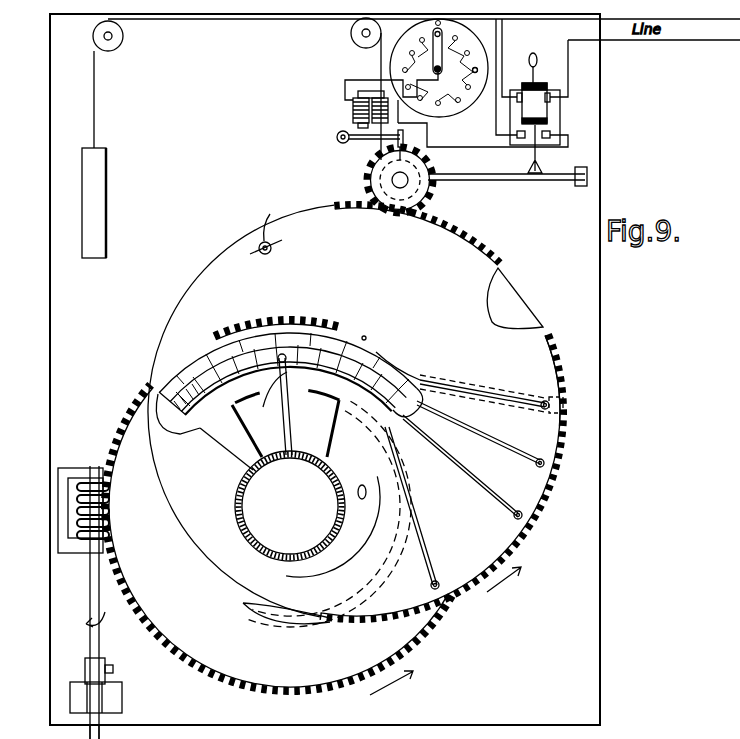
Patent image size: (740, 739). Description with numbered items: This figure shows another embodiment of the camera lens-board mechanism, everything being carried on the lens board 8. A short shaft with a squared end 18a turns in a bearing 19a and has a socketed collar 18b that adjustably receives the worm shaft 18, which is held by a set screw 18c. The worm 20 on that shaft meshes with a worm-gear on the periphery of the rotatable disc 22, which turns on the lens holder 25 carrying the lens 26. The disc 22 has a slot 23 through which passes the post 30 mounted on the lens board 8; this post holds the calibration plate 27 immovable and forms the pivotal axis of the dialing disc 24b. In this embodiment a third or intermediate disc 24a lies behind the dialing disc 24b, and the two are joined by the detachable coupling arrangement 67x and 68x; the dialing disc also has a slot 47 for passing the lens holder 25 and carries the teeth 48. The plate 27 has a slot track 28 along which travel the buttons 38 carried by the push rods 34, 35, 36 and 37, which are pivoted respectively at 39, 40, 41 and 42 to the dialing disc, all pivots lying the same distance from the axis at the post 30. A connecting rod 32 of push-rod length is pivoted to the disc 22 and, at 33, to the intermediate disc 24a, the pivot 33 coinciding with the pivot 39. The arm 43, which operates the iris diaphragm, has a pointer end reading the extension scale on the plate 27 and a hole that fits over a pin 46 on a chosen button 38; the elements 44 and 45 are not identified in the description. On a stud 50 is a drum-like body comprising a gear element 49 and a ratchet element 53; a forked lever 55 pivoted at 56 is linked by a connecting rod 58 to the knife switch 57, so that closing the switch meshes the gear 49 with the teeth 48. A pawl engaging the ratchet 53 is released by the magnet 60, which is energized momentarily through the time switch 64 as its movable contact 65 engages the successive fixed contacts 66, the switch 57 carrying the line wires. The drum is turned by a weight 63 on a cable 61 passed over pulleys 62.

The lens board 8 is at (50, 68).
The worm shaft 18 is at (67, 468).
The squared end of short shaft 18a is at (115, 731).
The socketed collar 18b is at (88, 665).
The set screw 18c is at (114, 669).
The bearing 19a is at (108, 701).
The worm 20 is at (108, 511).
The rotatable disc 22 is at (128, 419).
The slot 23 is at (249, 604).
The intermediate disc 24a is at (516, 308).
The dialing disc 24b is at (534, 343).
The lens holder 25 is at (329, 546).
The lens 26 is at (300, 491).
The calibration plate 27 is at (181, 436).
The slot track 28 is at (206, 418).
The post 30 is at (291, 423).
The connecting rod 32 is at (440, 376).
The pivot 33 is at (564, 401).
The push rod 34 is at (487, 399).
The push rod 35 is at (480, 476).
The push rod 36 is at (424, 556).
The push rod 37 is at (491, 441).
The button 38 is at (377, 352).
The pivot 39 is at (542, 400).
The pivot 40 is at (518, 510).
The pivot 41 is at (441, 581).
The pivot 42 is at (540, 458).
The arm 43 is at (287, 433).
The graduated scale 44 is at (283, 355).
The link 45 is at (271, 400).
The pin 46 is at (363, 335).
The slot 47 is at (362, 487).
The teeth 48 is at (470, 231).
The gear element 49 is at (421, 205).
The stud 50 is at (430, 190).
The ratchet element 53 is at (369, 182).
The forked lever 55 is at (555, 180).
The pivot 56 is at (581, 183).
The knife switch 57 is at (548, 111).
The connecting rod 58 is at (412, 142).
The magnet 60 is at (352, 110).
The cable 61 is at (226, 22).
The pulley 62 is at (118, 45).
The weight 63 is at (100, 177).
The time switch 64 is at (446, 114).
The movable contact 65 is at (433, 63).
The fixed contact 66 is at (471, 70).
The detachable coupling 67x is at (274, 217).
The detachable coupling 68x is at (273, 248).